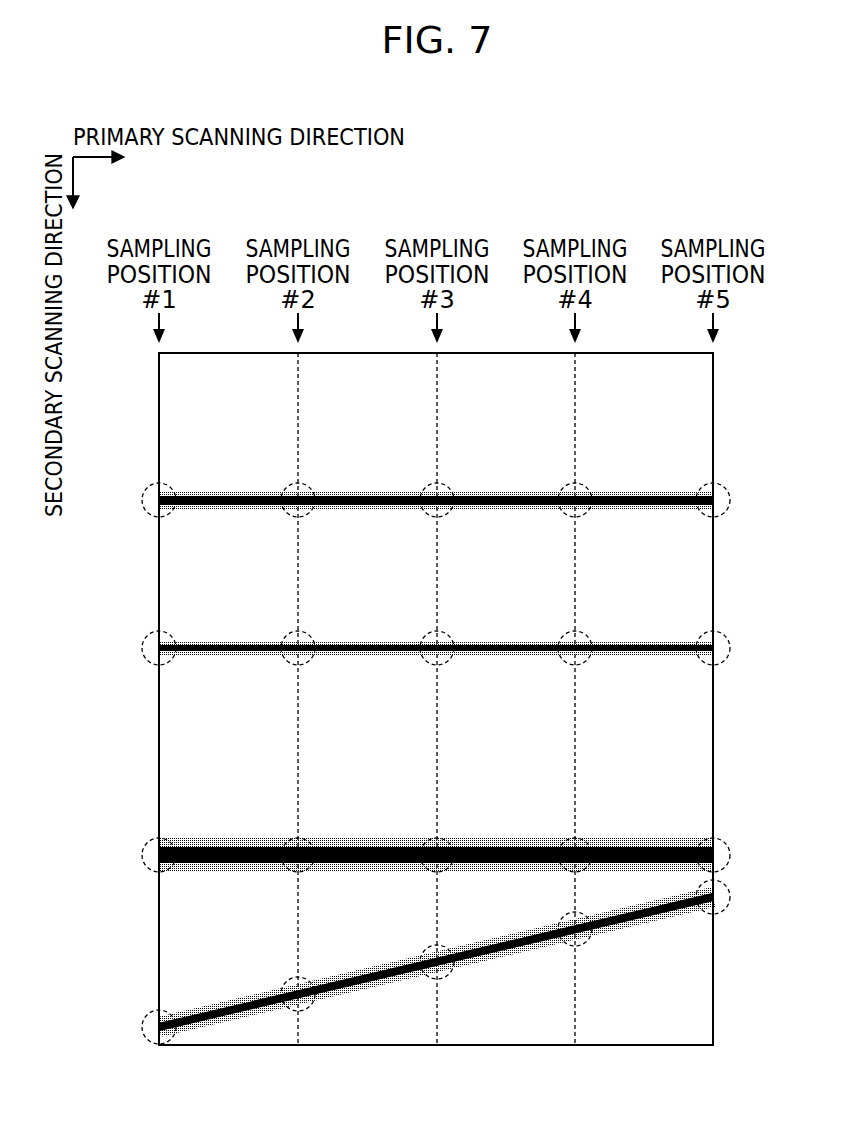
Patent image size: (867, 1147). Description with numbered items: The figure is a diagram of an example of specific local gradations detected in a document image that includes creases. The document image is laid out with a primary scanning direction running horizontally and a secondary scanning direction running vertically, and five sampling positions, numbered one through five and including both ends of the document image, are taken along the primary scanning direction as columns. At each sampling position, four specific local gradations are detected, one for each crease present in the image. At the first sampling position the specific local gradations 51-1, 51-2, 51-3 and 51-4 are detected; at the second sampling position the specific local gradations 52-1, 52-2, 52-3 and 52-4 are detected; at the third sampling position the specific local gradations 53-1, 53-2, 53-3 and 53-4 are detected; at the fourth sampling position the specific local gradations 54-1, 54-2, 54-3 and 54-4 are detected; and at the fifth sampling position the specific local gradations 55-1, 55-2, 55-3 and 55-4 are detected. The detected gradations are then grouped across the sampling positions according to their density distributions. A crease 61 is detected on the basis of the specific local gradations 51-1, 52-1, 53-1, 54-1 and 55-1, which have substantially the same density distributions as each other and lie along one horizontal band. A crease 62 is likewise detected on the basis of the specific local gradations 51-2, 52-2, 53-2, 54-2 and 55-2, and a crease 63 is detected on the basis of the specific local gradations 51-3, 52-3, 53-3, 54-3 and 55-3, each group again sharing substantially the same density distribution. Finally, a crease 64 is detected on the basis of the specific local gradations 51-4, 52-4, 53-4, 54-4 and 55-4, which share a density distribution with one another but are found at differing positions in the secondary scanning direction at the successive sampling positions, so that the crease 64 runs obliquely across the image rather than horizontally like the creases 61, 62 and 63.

The specific local gradation 51-1 is at (197, 470).
The specific local gradation 52-1 is at (334, 470).
The specific local gradation 53-1 is at (471, 470).
The specific local gradation 54-1 is at (607, 469).
The specific local gradation 55-1 is at (755, 475).
The specific local gradation 51-2 is at (197, 619).
The specific local gradation 52-2 is at (334, 619).
The specific local gradation 53-2 is at (471, 619).
The specific local gradation 54-2 is at (607, 619).
The specific local gradation 55-2 is at (755, 623).
The specific local gradation 51-3 is at (197, 827).
The specific local gradation 52-3 is at (334, 827).
The specific local gradation 53-3 is at (471, 825).
The specific local gradation 54-3 is at (607, 825).
The specific local gradation 55-3 is at (729, 846).
The specific local gradation 51-4 is at (197, 997).
The specific local gradation 52-4 is at (334, 965).
The specific local gradation 53-4 is at (471, 934).
The specific local gradation 54-4 is at (608, 898).
The specific local gradation 55-4 is at (757, 902).
The crease 61 is at (645, 492).
The crease 62 is at (648, 641).
The crease 63 is at (650, 847).
The crease 64 is at (650, 925).